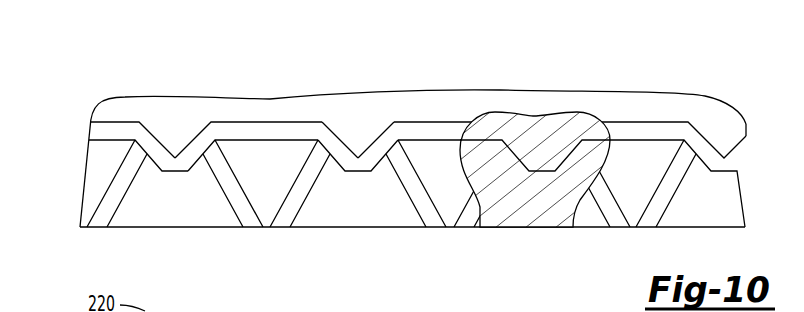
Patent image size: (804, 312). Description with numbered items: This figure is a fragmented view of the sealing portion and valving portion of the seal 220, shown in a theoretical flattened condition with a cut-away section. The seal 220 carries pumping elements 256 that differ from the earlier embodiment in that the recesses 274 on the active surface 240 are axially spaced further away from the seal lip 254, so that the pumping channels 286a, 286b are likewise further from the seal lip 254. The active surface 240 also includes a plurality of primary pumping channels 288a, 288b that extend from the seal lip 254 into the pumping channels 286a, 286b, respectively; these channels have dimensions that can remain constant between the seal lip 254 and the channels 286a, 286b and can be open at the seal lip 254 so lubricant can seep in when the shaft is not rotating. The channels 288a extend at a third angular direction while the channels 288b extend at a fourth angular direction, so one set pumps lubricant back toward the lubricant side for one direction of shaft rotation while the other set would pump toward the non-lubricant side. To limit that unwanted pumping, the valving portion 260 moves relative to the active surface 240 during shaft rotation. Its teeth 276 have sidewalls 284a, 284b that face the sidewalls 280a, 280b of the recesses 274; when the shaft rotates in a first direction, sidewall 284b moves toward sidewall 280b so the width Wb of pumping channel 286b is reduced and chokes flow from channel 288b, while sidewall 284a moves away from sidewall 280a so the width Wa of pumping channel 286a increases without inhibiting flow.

The seal 220 is at (656, 48).
The pumping elements 256 is at (55, 125).
The valving portion 260 is at (729, 117).
The active surface 240 is at (88, 207).
The seal lip 254 is at (587, 228).
The sidewall of tooth 284b is at (157, 135).
The sidewall of tooth 284a is at (193, 137).
The pumping channel 286b is at (330, 138).
The pumping channel 286a is at (381, 138).
The width of pumping channel 286b Wb is at (339, 122).
The width of pumping channel 286a Wa is at (380, 122).
The sidewall of recess 280b is at (143, 150).
The sidewall of recess 280a is at (214, 143).
The teeth 276 is at (412, 166).
The pumping channel 288b is at (100, 215).
The pumping channel 288a is at (228, 202).
The recesses 274 is at (533, 127).